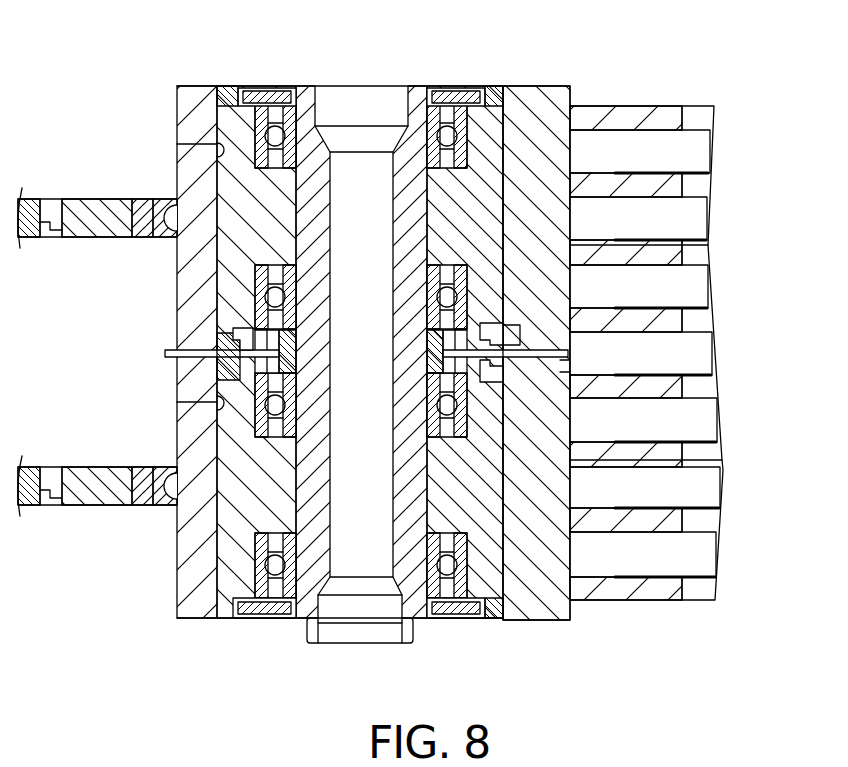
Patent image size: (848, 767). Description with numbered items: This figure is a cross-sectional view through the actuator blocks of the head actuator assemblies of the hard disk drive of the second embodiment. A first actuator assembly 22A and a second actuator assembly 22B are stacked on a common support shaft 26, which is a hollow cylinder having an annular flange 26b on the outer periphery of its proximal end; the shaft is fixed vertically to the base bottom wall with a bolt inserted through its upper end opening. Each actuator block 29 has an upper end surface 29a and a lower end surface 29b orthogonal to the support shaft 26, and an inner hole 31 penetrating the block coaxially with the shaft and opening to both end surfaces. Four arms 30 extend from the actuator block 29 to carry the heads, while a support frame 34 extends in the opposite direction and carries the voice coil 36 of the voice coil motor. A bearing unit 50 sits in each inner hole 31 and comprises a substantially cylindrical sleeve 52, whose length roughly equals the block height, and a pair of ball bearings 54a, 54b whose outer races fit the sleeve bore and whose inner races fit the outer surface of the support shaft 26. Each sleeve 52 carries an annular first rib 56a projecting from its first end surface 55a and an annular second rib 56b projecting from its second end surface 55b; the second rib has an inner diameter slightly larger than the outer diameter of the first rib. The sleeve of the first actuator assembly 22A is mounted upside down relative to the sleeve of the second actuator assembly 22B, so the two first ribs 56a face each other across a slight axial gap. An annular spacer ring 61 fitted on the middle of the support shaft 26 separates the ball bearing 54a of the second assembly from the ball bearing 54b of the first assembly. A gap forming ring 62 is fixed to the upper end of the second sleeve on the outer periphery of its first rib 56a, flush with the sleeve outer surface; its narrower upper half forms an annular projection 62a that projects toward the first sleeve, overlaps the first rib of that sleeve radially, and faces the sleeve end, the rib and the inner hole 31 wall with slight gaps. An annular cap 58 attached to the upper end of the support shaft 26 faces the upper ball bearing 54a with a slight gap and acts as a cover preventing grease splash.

The first actuator assembly 22A is at (625, 90).
The second actuator assembly 22B is at (612, 620).
The support shaft 26 is at (328, 130).
The annular flange 26b is at (300, 630).
The actuator block 29 is at (516, 100).
The upper end surface 29a is at (542, 86).
The lower end surface 29b is at (560, 368).
The arms 30 is at (688, 183).
The inner hole 31 is at (215, 150).
The support frame 34 is at (160, 220).
The voice coil 36 is at (68, 200).
The bearing unit 50 is at (507, 228).
The sleeve 52 is at (236, 240).
The ball bearing 54a is at (254, 128).
The ball bearing 54b is at (262, 290).
The first end surface 55a is at (487, 368).
The second end surface 55b is at (490, 330).
The first rib 56a is at (240, 340).
The second rib 56b is at (222, 97).
The cap 58 is at (266, 88).
The spacer ring 61 is at (287, 360).
The gap forming member 62 is at (213, 350).
The annular projection 62a is at (505, 325).